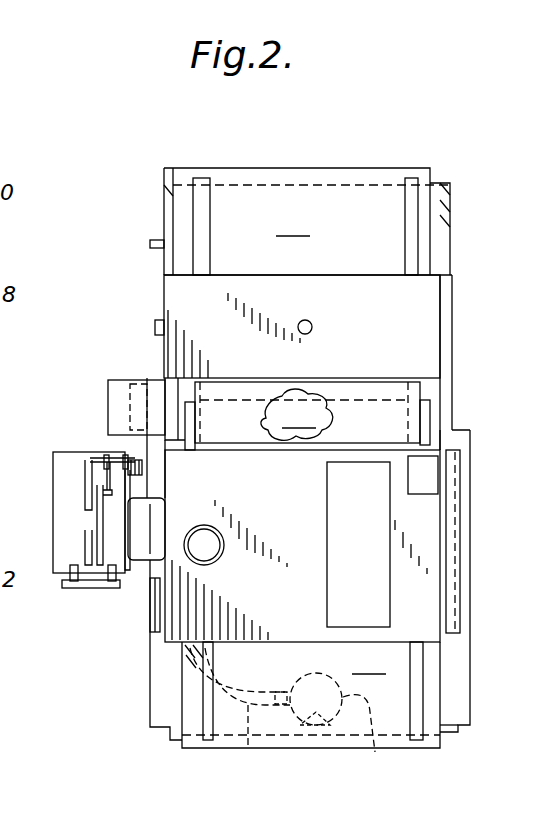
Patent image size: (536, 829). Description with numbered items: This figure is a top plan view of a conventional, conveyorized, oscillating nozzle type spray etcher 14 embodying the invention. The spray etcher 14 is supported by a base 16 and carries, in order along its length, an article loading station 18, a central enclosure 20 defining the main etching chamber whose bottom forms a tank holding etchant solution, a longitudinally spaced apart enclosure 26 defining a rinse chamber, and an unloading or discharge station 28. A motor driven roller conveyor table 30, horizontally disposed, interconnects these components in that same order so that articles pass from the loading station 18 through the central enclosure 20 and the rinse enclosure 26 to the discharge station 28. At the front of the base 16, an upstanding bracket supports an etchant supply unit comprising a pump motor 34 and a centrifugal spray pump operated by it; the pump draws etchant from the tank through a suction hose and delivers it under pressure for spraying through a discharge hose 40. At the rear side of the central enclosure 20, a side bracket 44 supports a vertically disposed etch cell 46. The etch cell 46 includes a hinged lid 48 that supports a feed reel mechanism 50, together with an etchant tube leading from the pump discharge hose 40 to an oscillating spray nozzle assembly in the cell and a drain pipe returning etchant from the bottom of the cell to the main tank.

The spray etcher 14 is at (452, 397).
The base 16 is at (447, 735).
The article loading station 18 is at (430, 680).
The central enclosure 20 is at (462, 530).
The rinse enclosure 26 is at (452, 322).
The unloading or discharge station 28 is at (418, 242).
The motor driven roller conveyor table 30 is at (307, 459).
The pump motor 34 is at (341, 741).
The discharge hose 40 is at (248, 748).
The side bracket 44 is at (140, 565).
The etch cell 46 is at (53, 512).
The hinged lid 48 is at (58, 478).
The feed reel mechanism 50 is at (100, 455).